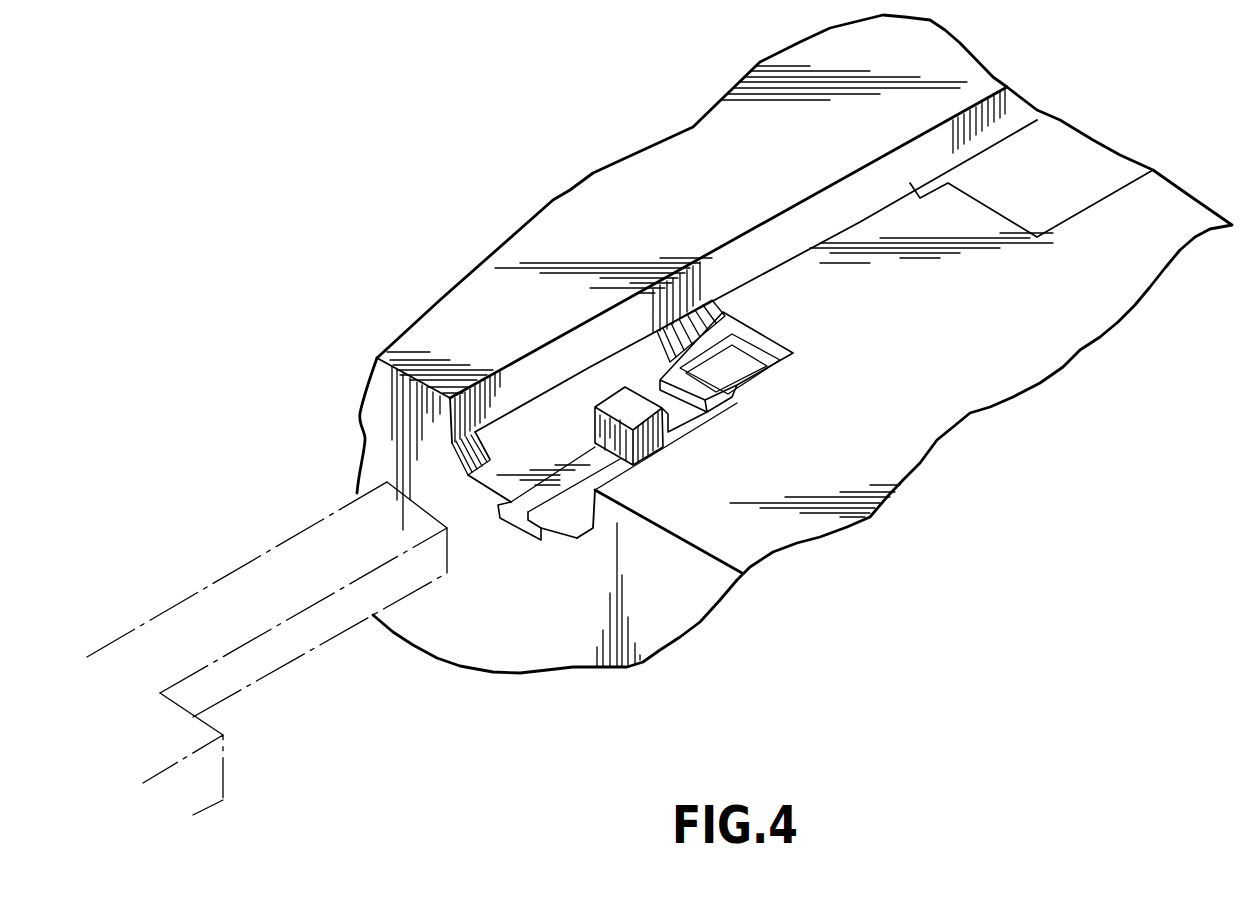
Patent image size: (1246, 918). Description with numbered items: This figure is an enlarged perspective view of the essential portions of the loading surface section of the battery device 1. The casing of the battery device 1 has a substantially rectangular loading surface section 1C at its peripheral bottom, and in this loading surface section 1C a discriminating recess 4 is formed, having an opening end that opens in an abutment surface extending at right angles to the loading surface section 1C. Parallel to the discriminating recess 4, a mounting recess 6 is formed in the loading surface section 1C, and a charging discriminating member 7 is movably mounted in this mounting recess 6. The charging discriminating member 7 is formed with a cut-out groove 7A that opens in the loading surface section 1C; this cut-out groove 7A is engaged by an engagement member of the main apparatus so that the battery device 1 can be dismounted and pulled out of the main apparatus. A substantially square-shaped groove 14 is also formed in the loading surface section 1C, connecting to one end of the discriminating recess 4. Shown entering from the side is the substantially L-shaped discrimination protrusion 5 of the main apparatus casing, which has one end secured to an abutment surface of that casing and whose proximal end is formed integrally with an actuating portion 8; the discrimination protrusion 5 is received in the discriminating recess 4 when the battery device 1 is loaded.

The battery device 1 is at (630, 143).
The loading surface section 1C is at (862, 443).
The discriminating recess 4 is at (507, 390).
The discrimination protrusion 5 is at (275, 560).
The mounting recess 6 is at (522, 523).
The charging discriminating member 7 is at (640, 413).
The cut-out groove 7A is at (682, 413).
The actuating portion 8 is at (220, 728).
The square-shaped groove 14 is at (1055, 224).